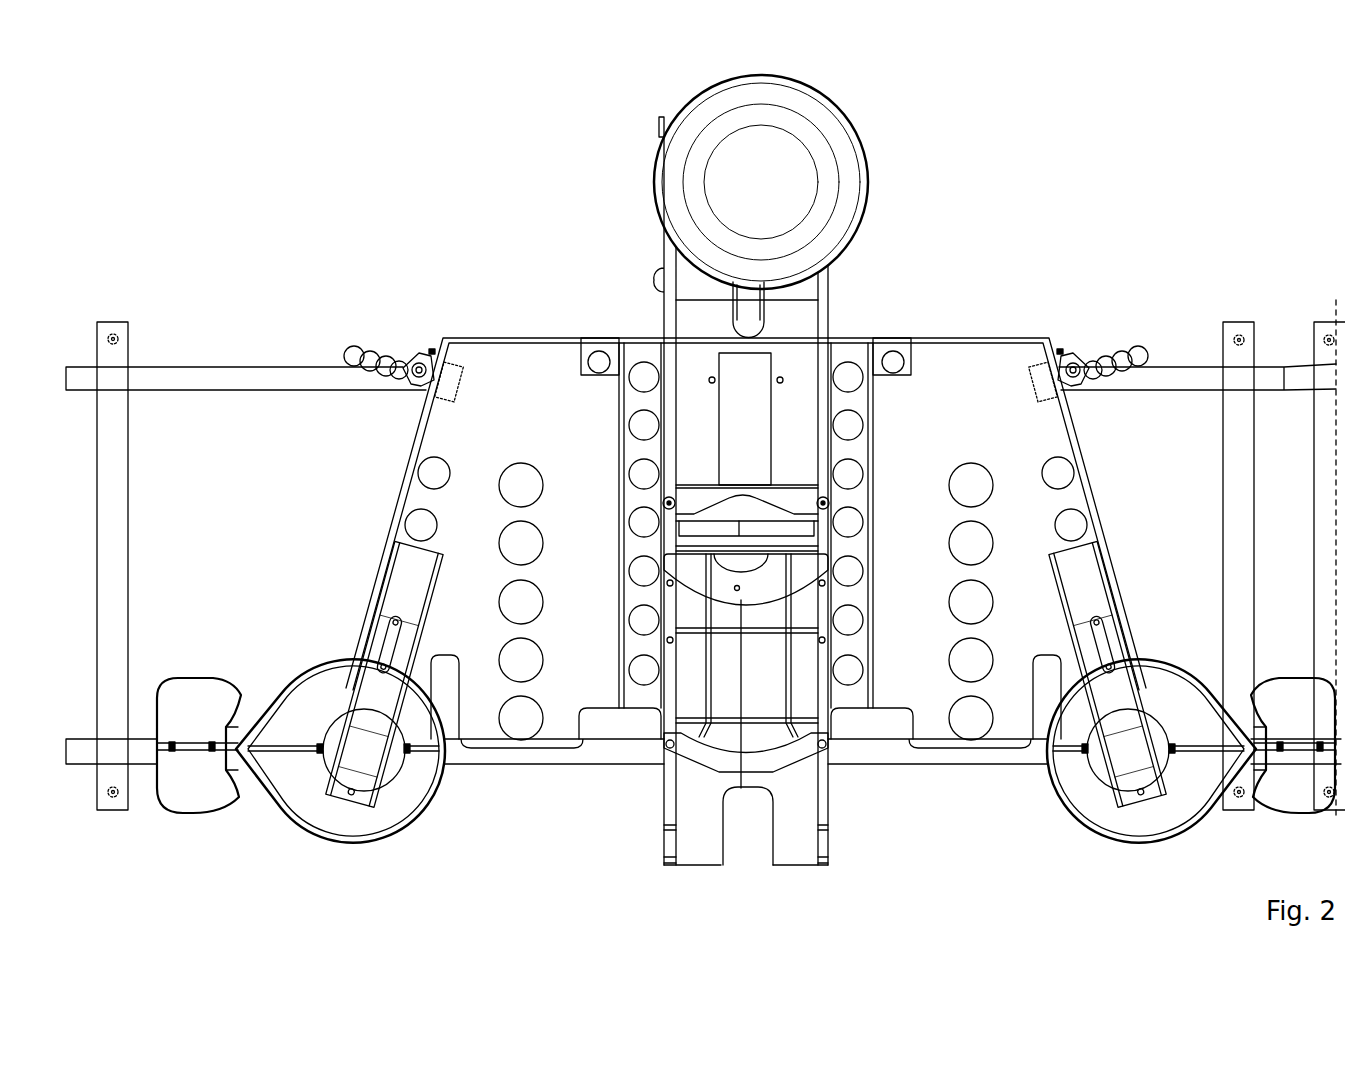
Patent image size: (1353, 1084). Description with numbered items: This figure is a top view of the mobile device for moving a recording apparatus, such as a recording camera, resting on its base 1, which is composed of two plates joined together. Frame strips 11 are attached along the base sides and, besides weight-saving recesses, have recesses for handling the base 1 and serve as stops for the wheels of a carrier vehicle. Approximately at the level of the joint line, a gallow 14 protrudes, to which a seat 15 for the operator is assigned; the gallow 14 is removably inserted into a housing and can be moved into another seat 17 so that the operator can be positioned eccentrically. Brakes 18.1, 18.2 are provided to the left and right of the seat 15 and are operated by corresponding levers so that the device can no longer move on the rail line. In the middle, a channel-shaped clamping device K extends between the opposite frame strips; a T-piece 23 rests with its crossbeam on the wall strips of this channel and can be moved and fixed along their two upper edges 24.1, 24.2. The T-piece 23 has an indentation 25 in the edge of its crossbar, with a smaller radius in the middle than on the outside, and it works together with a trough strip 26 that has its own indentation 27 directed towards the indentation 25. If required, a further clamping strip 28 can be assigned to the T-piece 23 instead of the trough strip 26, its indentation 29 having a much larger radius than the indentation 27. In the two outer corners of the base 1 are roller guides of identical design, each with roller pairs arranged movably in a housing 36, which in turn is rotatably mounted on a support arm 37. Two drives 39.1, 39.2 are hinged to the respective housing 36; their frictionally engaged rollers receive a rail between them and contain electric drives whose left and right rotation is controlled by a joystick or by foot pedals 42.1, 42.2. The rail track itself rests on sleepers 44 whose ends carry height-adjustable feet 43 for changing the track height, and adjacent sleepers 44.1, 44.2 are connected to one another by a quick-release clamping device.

The base 1 is at (950, 757).
The frame strips 11 is at (530, 344).
The gallow 14 is at (748, 298).
The seat 15 is at (825, 117).
The seat 17 is at (598, 358).
The brake 18.1 is at (378, 346).
The brake 18.2 is at (1121, 346).
The T-piece 23 is at (745, 378).
The upper edge 24.1 is at (668, 693).
The upper edge 24.2 is at (822, 693).
The indentation 25 is at (755, 505).
The trough strip 26 is at (785, 590).
The indentation 27 is at (745, 572).
The clamping strip 28 is at (786, 757).
The indentation 29 is at (737, 750).
The housing 36 is at (398, 812).
The support arm 37 is at (388, 590).
The drive 39.1 is at (187, 792).
The drive 39.2 is at (1290, 795).
The foot pedal 42.1 is at (453, 372).
The foot pedal 42.2 is at (1038, 378).
The height-adjustable feet 43 is at (118, 337).
The sleepers 44 is at (115, 545).
The sleeper 44.1 is at (1322, 500).
The sleeper 44.2 is at (1232, 500).
The clamping device K is at (655, 788).